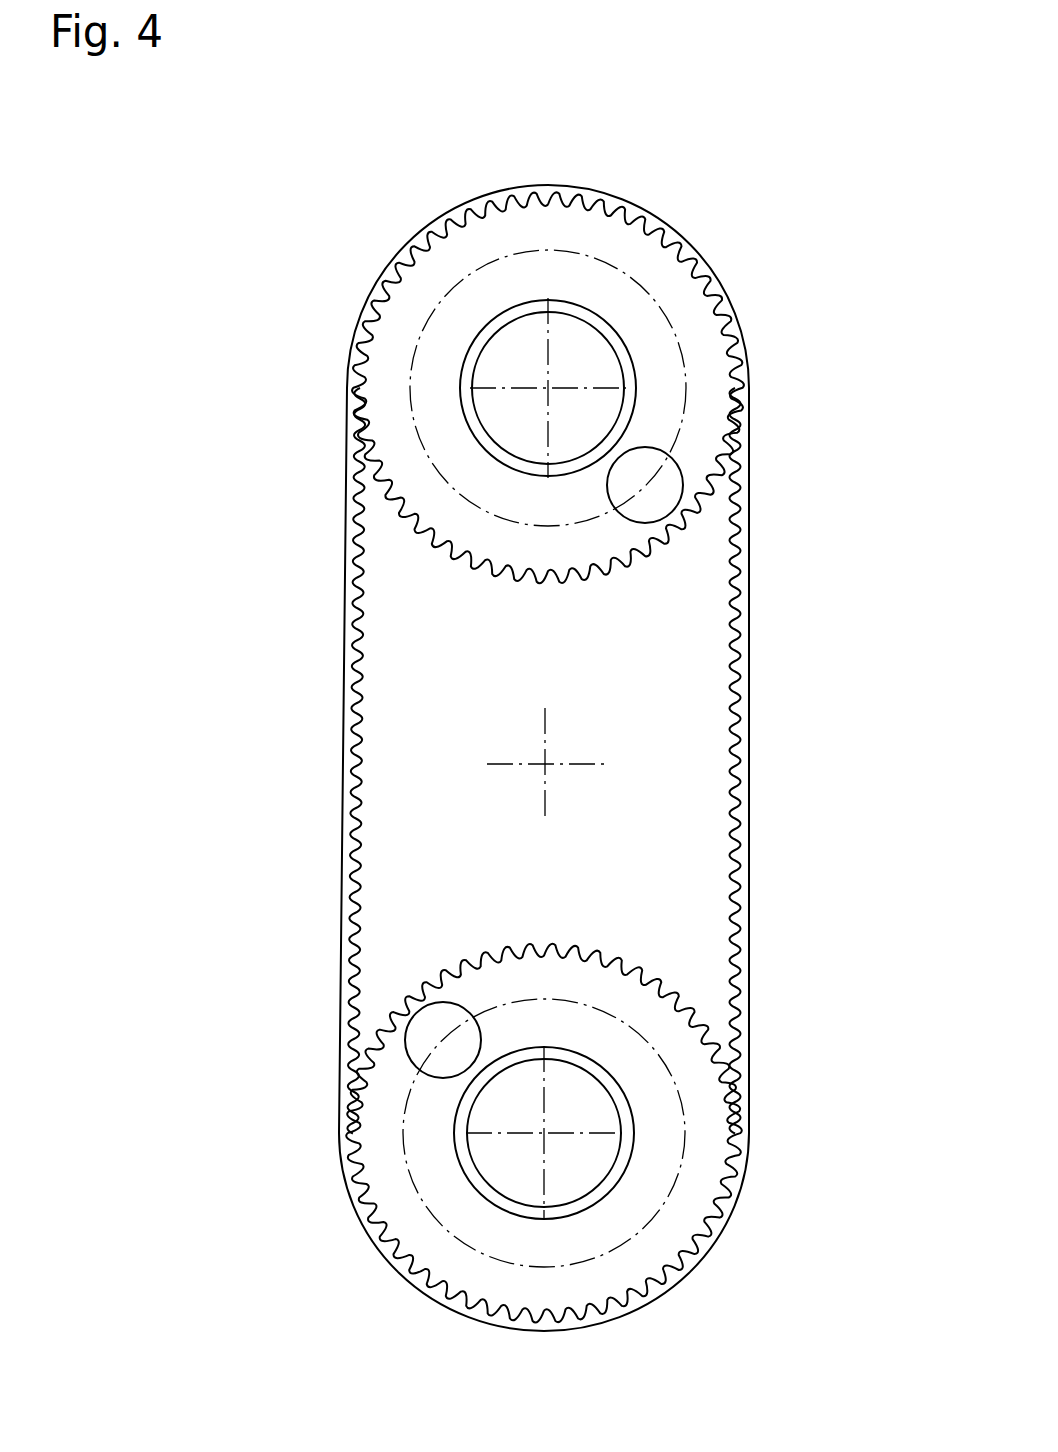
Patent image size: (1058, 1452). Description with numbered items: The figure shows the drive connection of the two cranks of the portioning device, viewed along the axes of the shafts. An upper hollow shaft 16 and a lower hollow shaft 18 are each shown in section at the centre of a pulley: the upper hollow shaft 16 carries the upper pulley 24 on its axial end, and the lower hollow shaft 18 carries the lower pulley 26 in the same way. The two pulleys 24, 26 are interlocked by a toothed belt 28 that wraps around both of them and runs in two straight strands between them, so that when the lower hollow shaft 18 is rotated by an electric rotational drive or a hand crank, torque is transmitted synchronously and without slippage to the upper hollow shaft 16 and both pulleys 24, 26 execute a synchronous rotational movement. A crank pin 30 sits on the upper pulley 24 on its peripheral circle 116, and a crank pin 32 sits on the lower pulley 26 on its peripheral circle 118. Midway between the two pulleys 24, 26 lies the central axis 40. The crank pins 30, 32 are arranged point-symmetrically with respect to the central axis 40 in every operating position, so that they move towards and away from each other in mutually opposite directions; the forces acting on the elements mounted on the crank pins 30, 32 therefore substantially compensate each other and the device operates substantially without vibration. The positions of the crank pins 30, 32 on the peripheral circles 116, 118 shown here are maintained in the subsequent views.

The upper hollow shaft 16 is at (595, 320).
The lower hollow shaft 18 is at (617, 1085).
The upper pulley 24 is at (698, 350).
The lower pulley 26 is at (652, 1250).
The toothed belt 28 is at (357, 610).
The crank pin 30 is at (657, 495).
The crank pin 32 is at (430, 1032).
The central axis 40 is at (547, 763).
The peripheral circle 116 is at (428, 322).
The peripheral circle 118 is at (438, 1222).